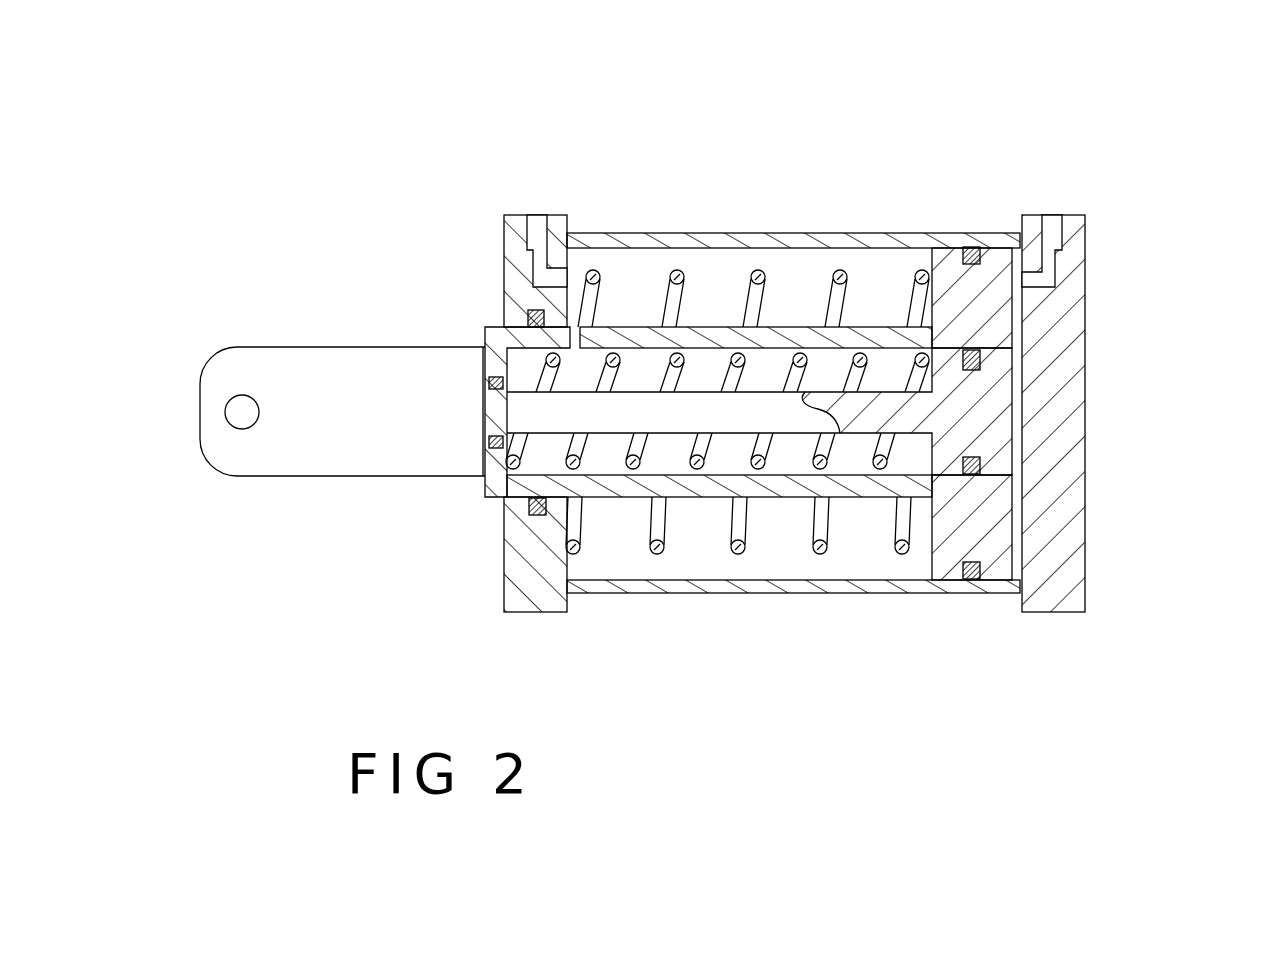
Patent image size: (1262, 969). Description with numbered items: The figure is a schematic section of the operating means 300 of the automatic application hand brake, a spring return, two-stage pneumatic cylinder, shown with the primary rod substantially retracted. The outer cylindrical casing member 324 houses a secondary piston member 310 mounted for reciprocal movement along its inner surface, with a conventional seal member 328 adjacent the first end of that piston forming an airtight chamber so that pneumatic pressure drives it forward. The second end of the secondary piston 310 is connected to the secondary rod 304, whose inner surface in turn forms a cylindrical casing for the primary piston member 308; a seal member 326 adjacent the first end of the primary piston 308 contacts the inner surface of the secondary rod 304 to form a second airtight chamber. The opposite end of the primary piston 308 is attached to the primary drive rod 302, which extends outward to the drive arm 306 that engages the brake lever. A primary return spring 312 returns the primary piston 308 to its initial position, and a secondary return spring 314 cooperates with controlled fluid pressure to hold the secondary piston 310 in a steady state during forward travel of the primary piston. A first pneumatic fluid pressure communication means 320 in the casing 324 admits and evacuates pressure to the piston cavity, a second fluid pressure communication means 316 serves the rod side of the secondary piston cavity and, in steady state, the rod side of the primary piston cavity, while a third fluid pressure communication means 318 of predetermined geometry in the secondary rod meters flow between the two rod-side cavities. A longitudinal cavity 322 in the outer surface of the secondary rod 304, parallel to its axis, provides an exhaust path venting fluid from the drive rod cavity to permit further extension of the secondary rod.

The operating means 300 is at (703, 380).
The primary drive rod 302 is at (548, 418).
The secondary rod 304 is at (614, 545).
The drive arm 306 is at (387, 360).
The primary piston member 308 is at (992, 407).
The secondary piston member 310 is at (987, 523).
The primary return spring 312 is at (775, 530).
The secondary return spring 314 is at (900, 555).
The second pneumatic fluid pressure communication means 316 is at (537, 225).
The third fluid pressure communication means 318 is at (578, 330).
The first pneumatic fluid pressure communication means 320 is at (1051, 222).
The longitudinal cavity 322 is at (728, 327).
The outer cylindrical casing member 324 is at (825, 587).
The seal member 326 is at (972, 346).
The seal member 328 is at (972, 250).